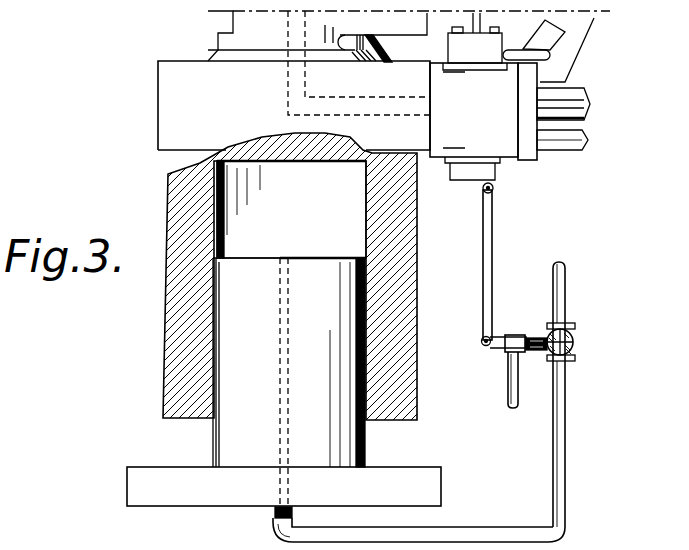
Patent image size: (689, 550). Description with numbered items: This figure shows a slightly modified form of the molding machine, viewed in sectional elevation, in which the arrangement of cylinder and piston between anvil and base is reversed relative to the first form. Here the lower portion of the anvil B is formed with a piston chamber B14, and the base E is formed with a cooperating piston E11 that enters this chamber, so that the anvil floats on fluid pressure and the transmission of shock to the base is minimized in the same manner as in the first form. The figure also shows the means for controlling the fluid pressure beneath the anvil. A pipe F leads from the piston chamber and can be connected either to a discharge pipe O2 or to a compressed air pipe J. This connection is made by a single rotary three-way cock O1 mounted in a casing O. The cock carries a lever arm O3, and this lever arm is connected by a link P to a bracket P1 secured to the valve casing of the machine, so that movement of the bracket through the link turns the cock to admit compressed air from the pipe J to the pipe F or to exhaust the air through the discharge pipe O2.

The anvil B is at (294, 80).
The piston chamber B14 is at (291, 209).
The base E is at (140, 492).
The piston E11 is at (289, 381).
The pipe F is at (445, 537).
The compressed air pipe J is at (568, 282).
The casing O is at (573, 350).
The rotary three-way cock O1 is at (568, 334).
The discharge pipe O2 is at (508, 388).
The lever arm O3 is at (500, 338).
The link P is at (493, 235).
The bracket P1 is at (466, 172).